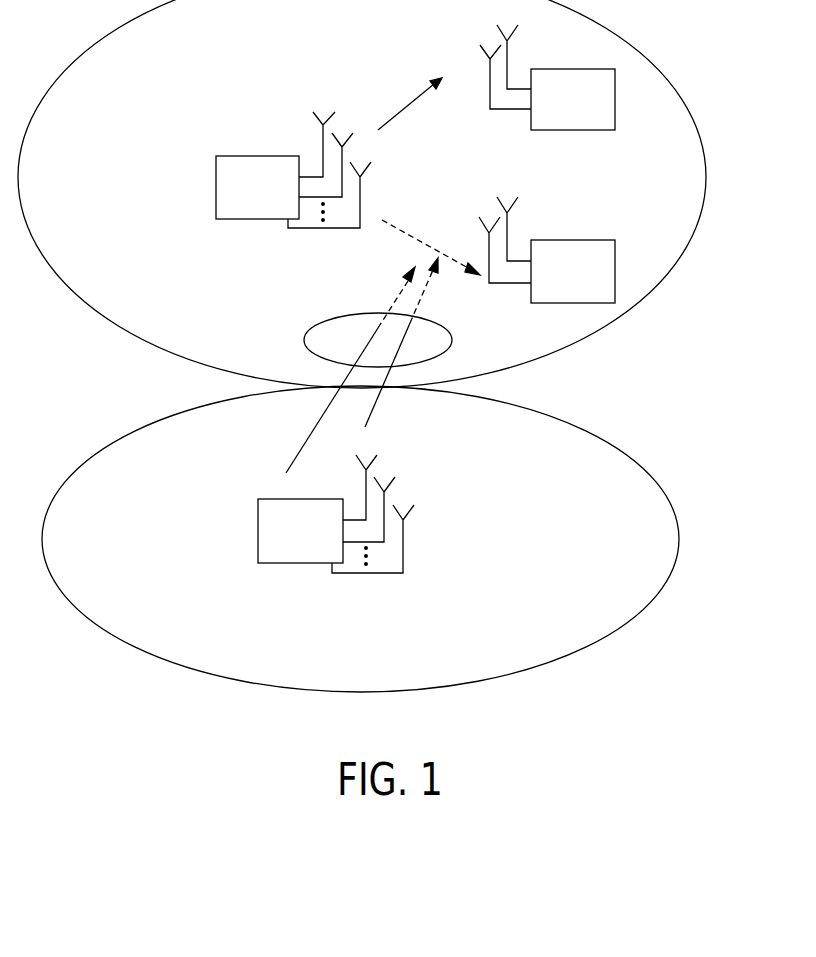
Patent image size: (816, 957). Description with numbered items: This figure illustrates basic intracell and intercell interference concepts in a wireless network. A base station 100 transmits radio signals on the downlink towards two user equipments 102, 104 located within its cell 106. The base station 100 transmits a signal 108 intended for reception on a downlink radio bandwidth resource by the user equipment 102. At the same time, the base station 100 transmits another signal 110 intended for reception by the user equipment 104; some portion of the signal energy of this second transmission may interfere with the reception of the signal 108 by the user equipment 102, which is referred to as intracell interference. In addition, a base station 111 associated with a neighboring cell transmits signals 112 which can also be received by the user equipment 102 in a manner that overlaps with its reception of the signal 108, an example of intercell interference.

The base station 100 is at (233, 156).
The user equipment 102 is at (560, 131).
The user equipment 104 is at (595, 240).
The cell 106 is at (705, 183).
The signal 108 is at (400, 110).
The signal intended for reception by UE 104 110 is at (417, 240).
The base station 111 is at (258, 528).
The signals 112 is at (304, 338).